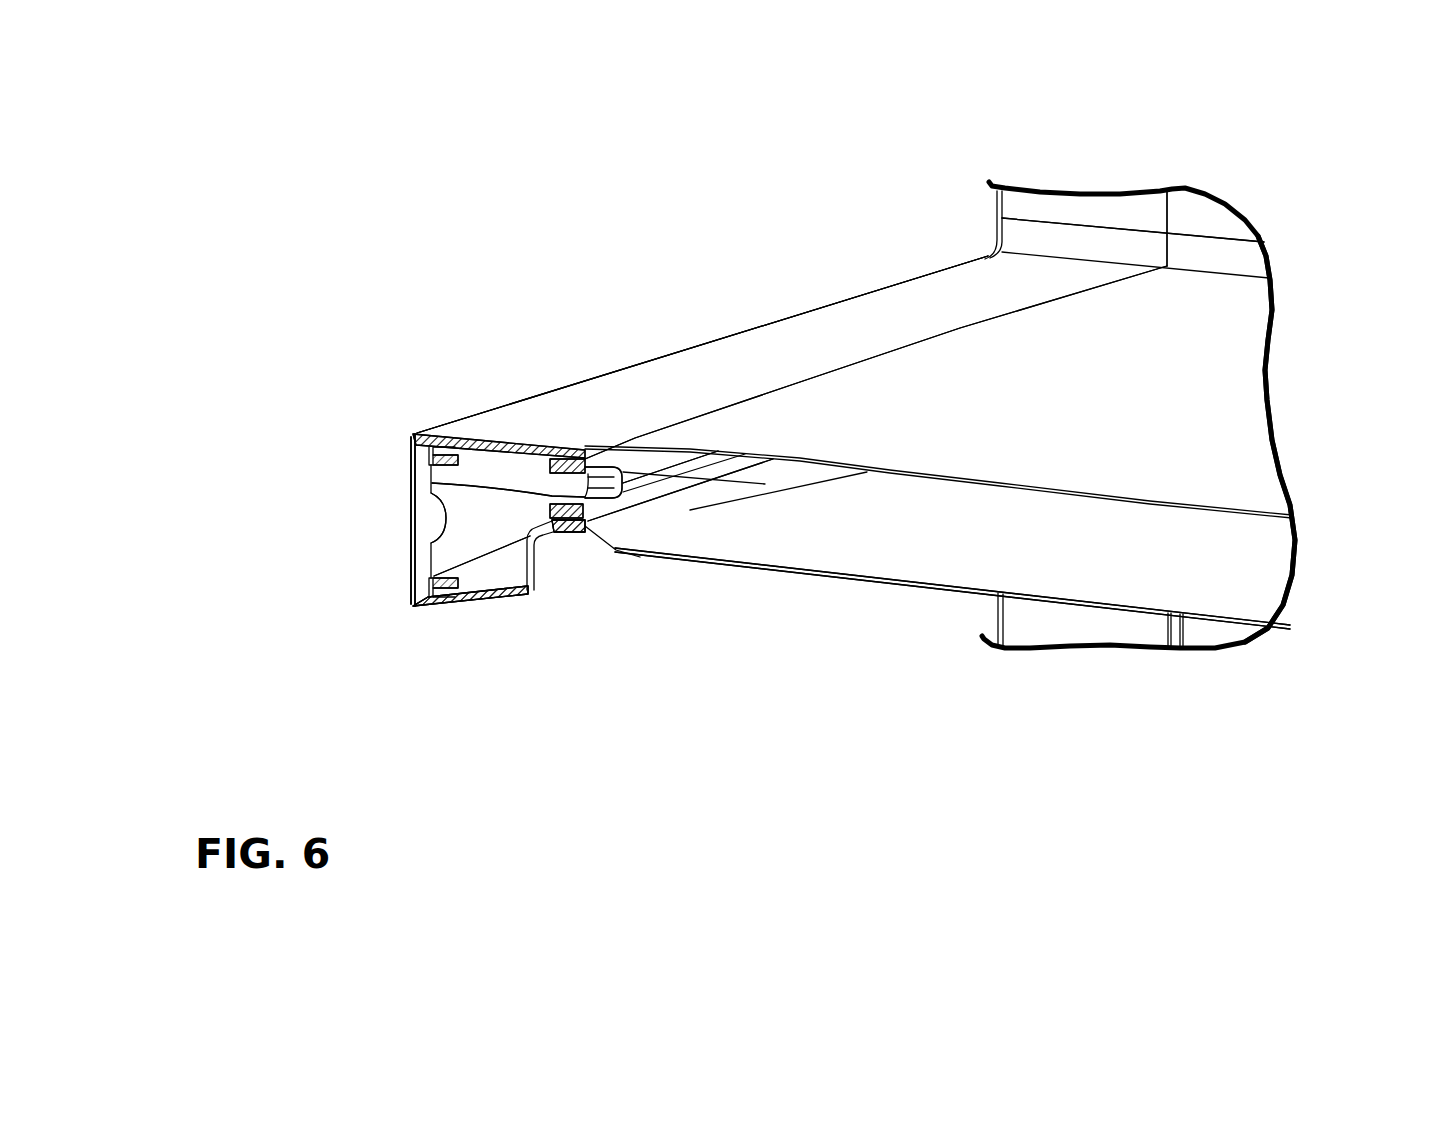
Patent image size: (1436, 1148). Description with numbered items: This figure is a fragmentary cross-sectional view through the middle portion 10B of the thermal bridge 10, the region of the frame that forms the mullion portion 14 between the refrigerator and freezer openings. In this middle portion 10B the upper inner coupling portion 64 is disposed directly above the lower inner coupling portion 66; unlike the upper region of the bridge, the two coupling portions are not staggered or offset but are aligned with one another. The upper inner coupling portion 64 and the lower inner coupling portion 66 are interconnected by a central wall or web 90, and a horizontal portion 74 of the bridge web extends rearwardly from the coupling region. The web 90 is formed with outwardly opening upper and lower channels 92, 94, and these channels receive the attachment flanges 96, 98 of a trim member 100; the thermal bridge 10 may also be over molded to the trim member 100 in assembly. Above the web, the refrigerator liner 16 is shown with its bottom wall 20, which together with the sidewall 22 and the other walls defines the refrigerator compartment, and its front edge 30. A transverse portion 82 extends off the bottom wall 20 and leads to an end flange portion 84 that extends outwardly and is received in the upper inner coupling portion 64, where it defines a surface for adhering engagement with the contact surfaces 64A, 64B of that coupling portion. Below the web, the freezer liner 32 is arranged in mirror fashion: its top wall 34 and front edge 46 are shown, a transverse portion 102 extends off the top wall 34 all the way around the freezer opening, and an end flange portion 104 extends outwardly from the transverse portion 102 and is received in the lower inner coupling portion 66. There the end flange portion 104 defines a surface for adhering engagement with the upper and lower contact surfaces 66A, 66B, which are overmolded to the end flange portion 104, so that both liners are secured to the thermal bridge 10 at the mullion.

The thermal bridge 10 is at (820, 243).
The middle portion 10B is at (583, 350).
The mullion portion 14 is at (463, 427).
The refrigerator liner 16 is at (1200, 260).
The bottom wall 20 is at (1203, 340).
The sidewall 22 is at (1184, 209).
The front edge 30 is at (533, 447).
The freezer liner 32 is at (1212, 556).
The top wall 34 is at (895, 587).
The front edge 46 is at (548, 537).
The upper inner coupling portion 64 is at (554, 426).
The contact surface 64A is at (598, 452).
The contact surface 64B is at (630, 488).
The lower inner coupling portion 66 is at (524, 506).
The upper contact surface 66A is at (430, 485).
The lower contact surface 66B is at (563, 530).
The horizontal portion 74 is at (925, 307).
The transverse portion 82 is at (612, 458).
The end flange portion 84 is at (586, 446).
The central wall or web 90 is at (488, 606).
The upper channel 92 is at (438, 431).
The lower channel 94 is at (418, 616).
The attachment flange 96 is at (415, 472).
The attachment flange 98 is at (445, 582).
The trim member 100 is at (414, 545).
The transverse portion 102 is at (643, 528).
The end flange portion 104 is at (573, 535).